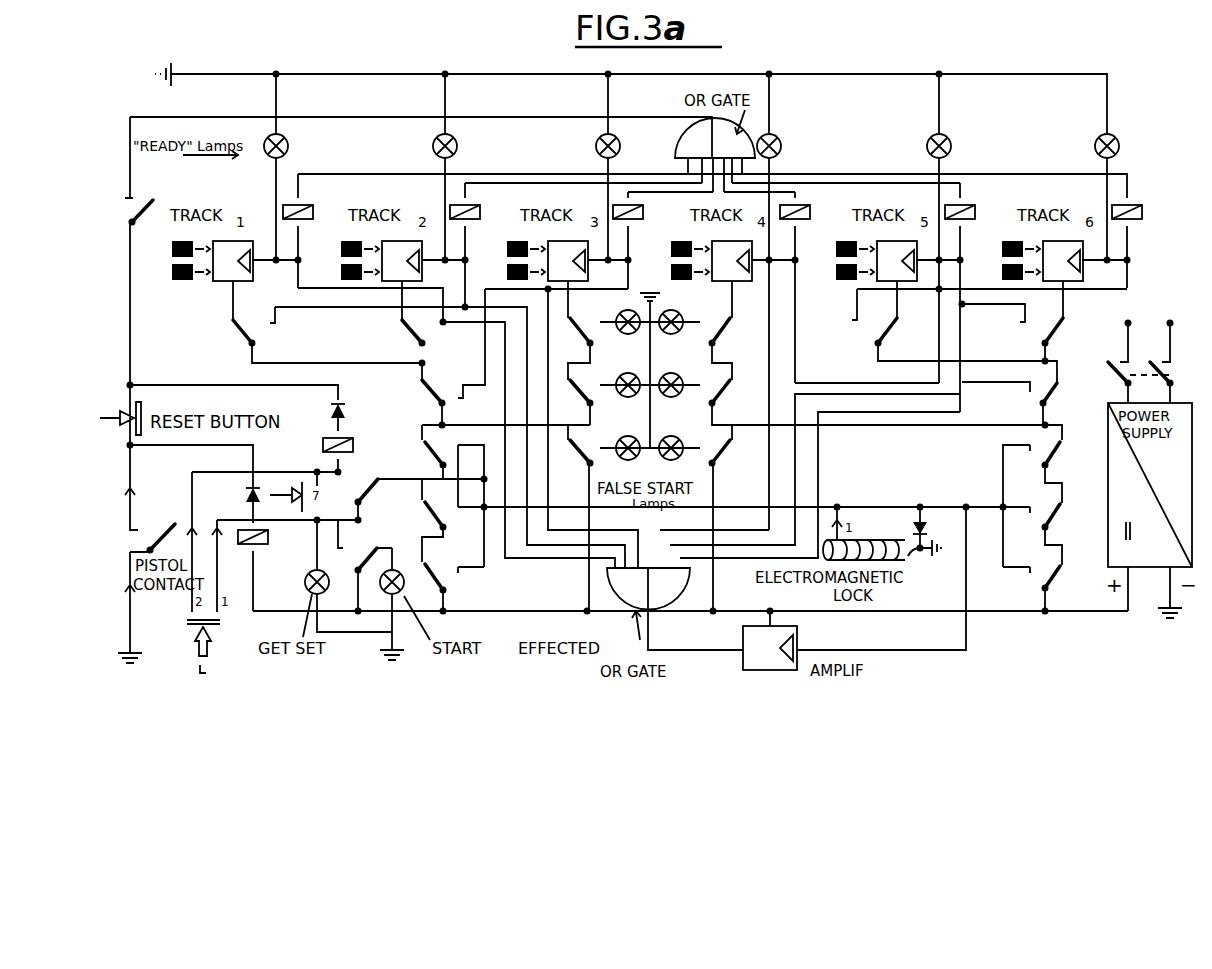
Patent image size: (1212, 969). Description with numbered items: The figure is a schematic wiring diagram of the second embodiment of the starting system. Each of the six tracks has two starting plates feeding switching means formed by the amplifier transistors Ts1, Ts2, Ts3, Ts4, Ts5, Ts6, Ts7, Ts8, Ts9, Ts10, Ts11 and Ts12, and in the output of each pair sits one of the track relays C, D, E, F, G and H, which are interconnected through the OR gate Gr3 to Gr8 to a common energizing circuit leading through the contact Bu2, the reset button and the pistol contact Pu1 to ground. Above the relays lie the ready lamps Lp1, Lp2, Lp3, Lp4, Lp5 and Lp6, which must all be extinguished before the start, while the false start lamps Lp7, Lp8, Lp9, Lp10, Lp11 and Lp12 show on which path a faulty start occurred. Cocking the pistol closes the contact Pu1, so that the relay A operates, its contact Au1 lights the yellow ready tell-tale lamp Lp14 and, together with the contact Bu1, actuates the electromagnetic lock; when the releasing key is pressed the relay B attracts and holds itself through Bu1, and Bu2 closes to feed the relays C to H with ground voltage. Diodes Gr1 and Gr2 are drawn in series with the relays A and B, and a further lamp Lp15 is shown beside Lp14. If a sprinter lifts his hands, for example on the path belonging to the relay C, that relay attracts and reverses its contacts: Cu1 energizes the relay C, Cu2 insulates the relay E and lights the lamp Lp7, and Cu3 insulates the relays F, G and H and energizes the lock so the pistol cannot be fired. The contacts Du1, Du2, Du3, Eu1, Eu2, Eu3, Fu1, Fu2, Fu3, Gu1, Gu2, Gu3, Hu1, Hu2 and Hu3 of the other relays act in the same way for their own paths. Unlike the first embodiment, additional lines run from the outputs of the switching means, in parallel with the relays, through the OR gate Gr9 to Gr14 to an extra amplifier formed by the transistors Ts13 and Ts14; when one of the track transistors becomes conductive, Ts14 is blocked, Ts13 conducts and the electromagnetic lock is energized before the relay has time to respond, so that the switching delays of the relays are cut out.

The ready lamp Lp1 is at (293, 146).
The ready lamp Lp2 is at (464, 146).
The ready lamp Lp3 is at (623, 146).
The ready lamp Lp4 is at (787, 146).
The ready lamp Lp5 is at (955, 146).
The ready lamp Lp6 is at (1121, 146).
The false start lamp Lp7 is at (626, 316).
The false start lamp Lp8 is at (626, 379).
The false start lamp Lp9 is at (626, 442).
The false start lamp Lp10 is at (674, 442).
The false start lamp Lp11 is at (674, 379).
The false start lamp Lp12 is at (674, 316).
The ready tell-tale lamp Lp14 is at (305, 592).
The start effected lamp Lp15 is at (404, 592).
The relay A is at (267, 537).
The relay B is at (352, 445).
The relay C is at (310, 212).
The relay D is at (478, 212).
The relay E is at (642, 212).
The relay F is at (808, 212).
The relay G is at (973, 212).
The relay H is at (1140, 212).
The amplifier transistor Ts1 is at (212, 261).
The amplifier transistor Ts2 is at (212, 261).
The amplifier transistor Ts3 is at (381, 261).
The amplifier transistor Ts4 is at (381, 261).
The amplifier transistor Ts5 is at (547, 261).
The amplifier transistor Ts6 is at (547, 261).
The amplifier transistor Ts7 is at (711, 261).
The amplifier transistor Ts8 is at (711, 261).
The amplifier transistor Ts9 is at (876, 261).
The amplifier transistor Ts10 is at (876, 261).
The amplifier transistor Ts11 is at (1042, 261).
The amplifier transistor Ts12 is at (1042, 261).
The transistor Ts13 is at (770, 648).
The transistor Ts14 is at (770, 648).
The diode Gr1 is at (236, 495).
The diode Gr2 is at (352, 412).
The OR gate diode Gr3 is at (715, 138).
The OR gate diode Gr8 is at (715, 138).
The diode Gr9 is at (648, 588).
The diode Gr14 is at (648, 588).
The contact of relay B Bu1 is at (369, 489).
The contact of relay B Bu2 is at (121, 213).
The pistol contact Pu1 is at (139, 539).
The contact of relay A Au1 is at (354, 560).
The contact of relay C Cu1 is at (416, 330).
The contact of relay C Cu2 is at (584, 330).
The contact of relay C Cu3 is at (1047, 576).
The contact of relay D Du1 is at (249, 330).
The contact of relay D Du2 is at (584, 392).
The contact of relay D Du3 is at (1047, 514).
The contact of relay E Eu1 is at (434, 391).
The contact of relay E Eu2 is at (584, 455).
The contact of relay E Eu3 is at (1047, 452).
The contact of relay F Fu1 is at (1048, 392).
The contact of relay F Fu2 is at (713, 455).
The contact of relay F Fu3 is at (437, 452).
The contact of relay G Gu1 is at (1046, 329).
The contact of relay G Gu2 is at (713, 392).
The contact of relay G Gu3 is at (437, 514).
The contact of relay H Hu1 is at (879, 329).
The contact of relay H Hu2 is at (713, 330).
The contact of relay H Hu3 is at (437, 576).